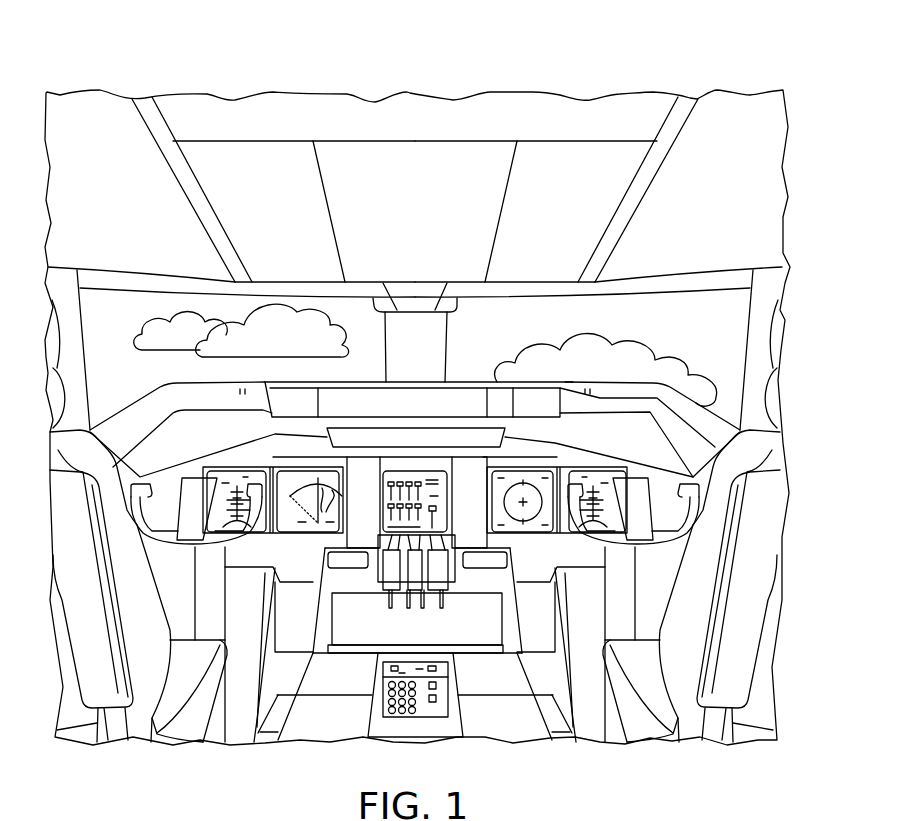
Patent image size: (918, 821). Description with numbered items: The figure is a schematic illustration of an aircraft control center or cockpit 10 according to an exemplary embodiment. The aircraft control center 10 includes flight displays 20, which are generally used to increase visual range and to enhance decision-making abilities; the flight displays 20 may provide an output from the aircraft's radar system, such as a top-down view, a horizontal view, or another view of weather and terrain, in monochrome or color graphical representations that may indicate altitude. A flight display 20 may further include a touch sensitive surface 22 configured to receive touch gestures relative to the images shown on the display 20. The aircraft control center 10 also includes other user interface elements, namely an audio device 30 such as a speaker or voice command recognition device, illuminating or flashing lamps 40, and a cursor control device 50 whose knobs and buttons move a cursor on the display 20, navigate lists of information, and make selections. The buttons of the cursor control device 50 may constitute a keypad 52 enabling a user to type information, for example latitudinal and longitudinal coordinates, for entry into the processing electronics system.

The aircraft control center 10 is at (748, 74).
The flight displays 20 is at (230, 470).
The touch sensitive surface 22 is at (293, 490).
The audio device 30 is at (485, 560).
The illuminating or flashing lamps 40 is at (503, 398).
The cursor control device 50 is at (443, 672).
The keypad 52 is at (397, 718).